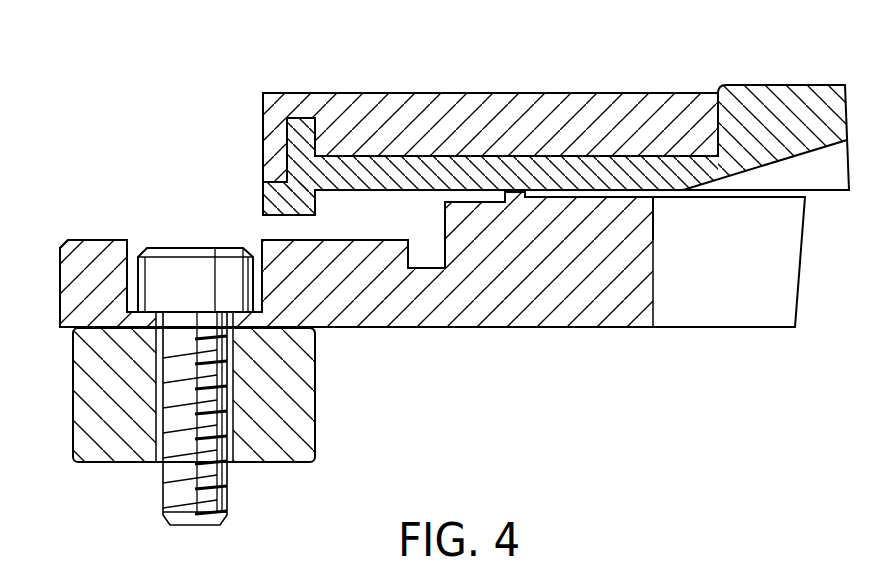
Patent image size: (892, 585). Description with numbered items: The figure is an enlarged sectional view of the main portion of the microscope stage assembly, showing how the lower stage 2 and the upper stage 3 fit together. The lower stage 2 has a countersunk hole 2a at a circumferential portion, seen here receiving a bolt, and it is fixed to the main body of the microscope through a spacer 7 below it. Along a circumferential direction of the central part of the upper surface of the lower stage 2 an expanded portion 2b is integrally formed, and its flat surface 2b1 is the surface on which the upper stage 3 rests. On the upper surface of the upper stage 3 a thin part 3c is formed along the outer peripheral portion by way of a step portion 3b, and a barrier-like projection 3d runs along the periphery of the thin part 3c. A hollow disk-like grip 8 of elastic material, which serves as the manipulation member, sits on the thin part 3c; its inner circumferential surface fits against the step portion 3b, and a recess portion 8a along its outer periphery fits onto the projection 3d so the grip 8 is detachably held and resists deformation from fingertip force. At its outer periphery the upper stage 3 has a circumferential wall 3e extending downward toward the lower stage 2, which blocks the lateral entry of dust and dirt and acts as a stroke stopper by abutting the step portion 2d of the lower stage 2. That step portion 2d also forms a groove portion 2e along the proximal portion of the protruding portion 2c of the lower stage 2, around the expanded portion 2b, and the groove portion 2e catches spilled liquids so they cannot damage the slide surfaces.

The lower stage 2 is at (525, 303).
The countersunk hole 2a is at (105, 292).
The expanded portion 2b is at (518, 192).
The flat surface 2b1 is at (518, 190).
The protruding portion 2c is at (100, 258).
The step portion 2d is at (445, 235).
The groove portion 2e is at (428, 258).
The upper stage 3 is at (773, 110).
The step portion 3b is at (712, 126).
The thin part 3c is at (488, 168).
The projection 3d is at (296, 138).
The circumferential wall 3e is at (262, 200).
The spacer 7 is at (267, 450).
The grip 8 is at (417, 117).
The recess portion 8a is at (318, 145).